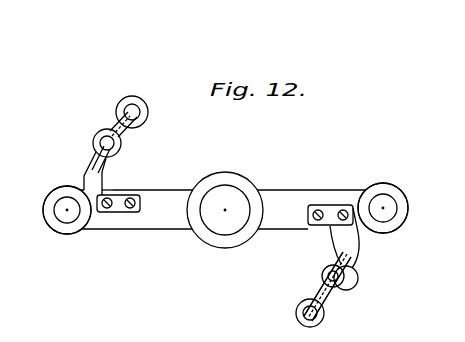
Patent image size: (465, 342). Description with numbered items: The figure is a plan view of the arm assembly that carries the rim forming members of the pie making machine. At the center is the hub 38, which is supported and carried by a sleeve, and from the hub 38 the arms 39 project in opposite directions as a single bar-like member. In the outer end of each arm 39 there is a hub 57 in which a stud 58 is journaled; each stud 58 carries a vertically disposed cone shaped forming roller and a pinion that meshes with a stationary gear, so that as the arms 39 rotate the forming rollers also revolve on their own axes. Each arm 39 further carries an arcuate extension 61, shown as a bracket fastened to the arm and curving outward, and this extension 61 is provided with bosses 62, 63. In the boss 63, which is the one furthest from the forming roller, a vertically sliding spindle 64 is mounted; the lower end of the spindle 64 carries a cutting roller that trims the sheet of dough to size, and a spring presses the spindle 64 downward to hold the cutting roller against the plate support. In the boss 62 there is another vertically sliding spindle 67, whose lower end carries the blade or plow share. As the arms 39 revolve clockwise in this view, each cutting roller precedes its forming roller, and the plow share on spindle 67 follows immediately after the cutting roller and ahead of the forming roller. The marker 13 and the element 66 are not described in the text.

The section line 13 is at (163, 68).
The hub 38 is at (241, 191).
The arm 39 is at (223, 198).
The hub 57 is at (69, 235).
The stud 58 is at (66, 210).
The arcuate extension 61 is at (359, 251).
The boss 62 is at (121, 150).
The boss 63 is at (146, 118).
The spindle 64 is at (134, 116).
The rod 66 is at (321, 297).
The spindle 67 is at (100, 142).